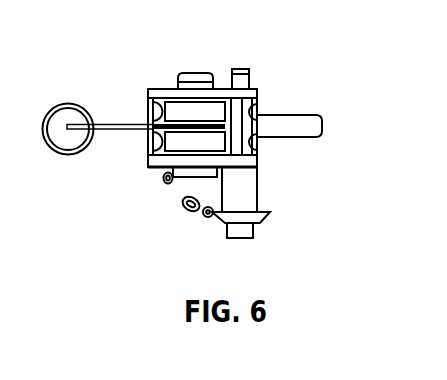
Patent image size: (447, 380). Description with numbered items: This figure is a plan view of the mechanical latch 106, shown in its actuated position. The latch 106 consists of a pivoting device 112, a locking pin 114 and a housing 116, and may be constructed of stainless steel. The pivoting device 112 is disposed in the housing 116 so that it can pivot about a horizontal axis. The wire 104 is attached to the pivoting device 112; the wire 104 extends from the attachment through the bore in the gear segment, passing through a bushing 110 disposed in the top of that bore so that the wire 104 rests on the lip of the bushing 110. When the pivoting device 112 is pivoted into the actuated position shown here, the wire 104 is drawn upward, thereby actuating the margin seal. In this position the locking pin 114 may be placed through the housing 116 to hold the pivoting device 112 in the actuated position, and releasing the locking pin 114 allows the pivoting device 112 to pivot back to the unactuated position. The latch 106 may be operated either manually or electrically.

The wire 104 is at (117, 130).
The latch 106 is at (203, 120).
The bushing 110 is at (83, 106).
The pivoting device 112 is at (310, 121).
The locking pin 114 is at (258, 186).
The housing 116 is at (157, 88).